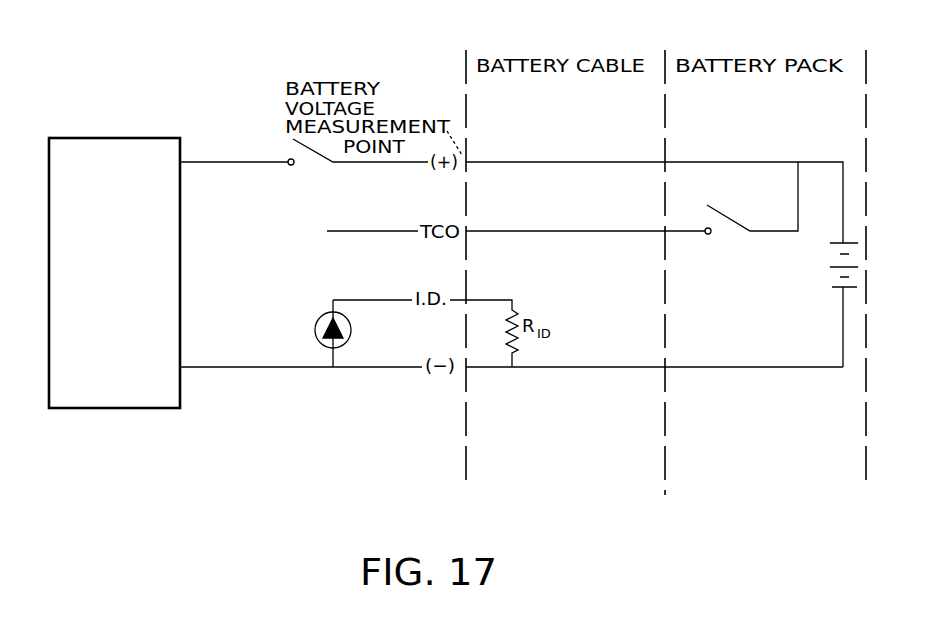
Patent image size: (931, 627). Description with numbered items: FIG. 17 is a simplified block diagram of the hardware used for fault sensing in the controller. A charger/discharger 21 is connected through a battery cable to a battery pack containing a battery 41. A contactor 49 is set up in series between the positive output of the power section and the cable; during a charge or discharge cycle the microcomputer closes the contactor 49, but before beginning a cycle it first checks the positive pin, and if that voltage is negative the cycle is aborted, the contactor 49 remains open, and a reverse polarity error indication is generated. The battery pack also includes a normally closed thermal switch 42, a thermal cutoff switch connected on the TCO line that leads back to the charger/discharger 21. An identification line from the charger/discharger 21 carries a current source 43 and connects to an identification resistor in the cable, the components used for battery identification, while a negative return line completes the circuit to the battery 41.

The battery charger 21 is at (105, 393).
The contactor 49 is at (283, 150).
The normally closed thermal switch 42 is at (730, 216).
The battery 41 is at (835, 283).
The current source 43 is at (352, 337).